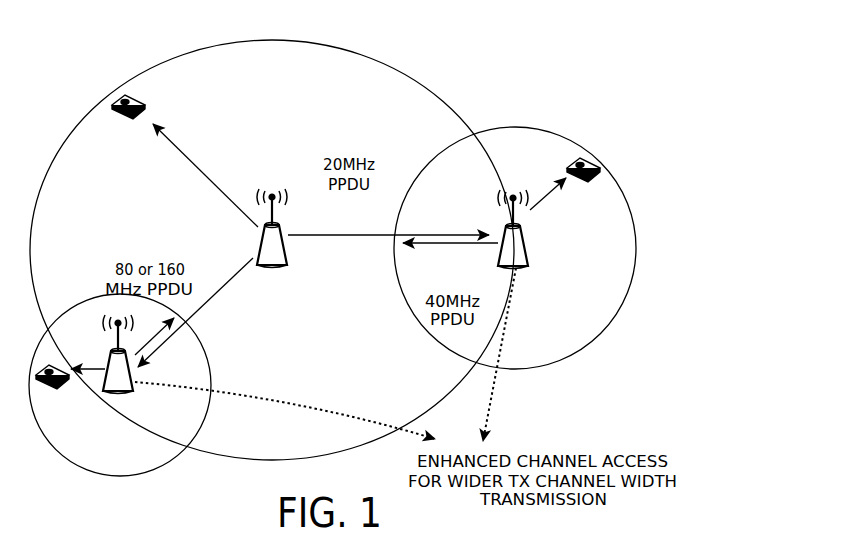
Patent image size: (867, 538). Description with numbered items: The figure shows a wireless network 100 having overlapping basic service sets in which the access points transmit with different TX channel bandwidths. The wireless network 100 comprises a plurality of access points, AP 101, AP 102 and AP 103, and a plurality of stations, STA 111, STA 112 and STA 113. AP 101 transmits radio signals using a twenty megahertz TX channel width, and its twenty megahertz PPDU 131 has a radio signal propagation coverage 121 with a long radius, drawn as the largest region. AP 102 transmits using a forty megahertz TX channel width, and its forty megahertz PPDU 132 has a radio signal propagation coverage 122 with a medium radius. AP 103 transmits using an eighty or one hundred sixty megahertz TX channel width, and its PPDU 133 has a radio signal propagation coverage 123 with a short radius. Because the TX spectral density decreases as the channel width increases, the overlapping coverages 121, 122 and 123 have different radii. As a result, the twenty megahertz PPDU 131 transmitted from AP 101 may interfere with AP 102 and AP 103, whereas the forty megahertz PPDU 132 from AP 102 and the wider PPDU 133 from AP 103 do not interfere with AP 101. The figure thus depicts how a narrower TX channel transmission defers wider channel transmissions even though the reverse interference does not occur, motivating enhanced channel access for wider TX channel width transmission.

The wireless network 100 is at (714, 58).
The access point 101 is at (273, 267).
The access point 102 is at (519, 268).
The access point 103 is at (121, 392).
The station 111 is at (128, 95).
The station 112 is at (580, 155).
The station 113 is at (50, 363).
The radio signal propagation coverage 121 is at (289, 78).
The radio signal propagation coverage 122 is at (574, 333).
The radio signal propagation coverage 123 is at (135, 446).
The 20 MHz PPDU 131 is at (344, 235).
The 40 MHz PPDU 132 is at (452, 245).
The 80 MHz or 160 MHz PPDU 133 is at (155, 336).